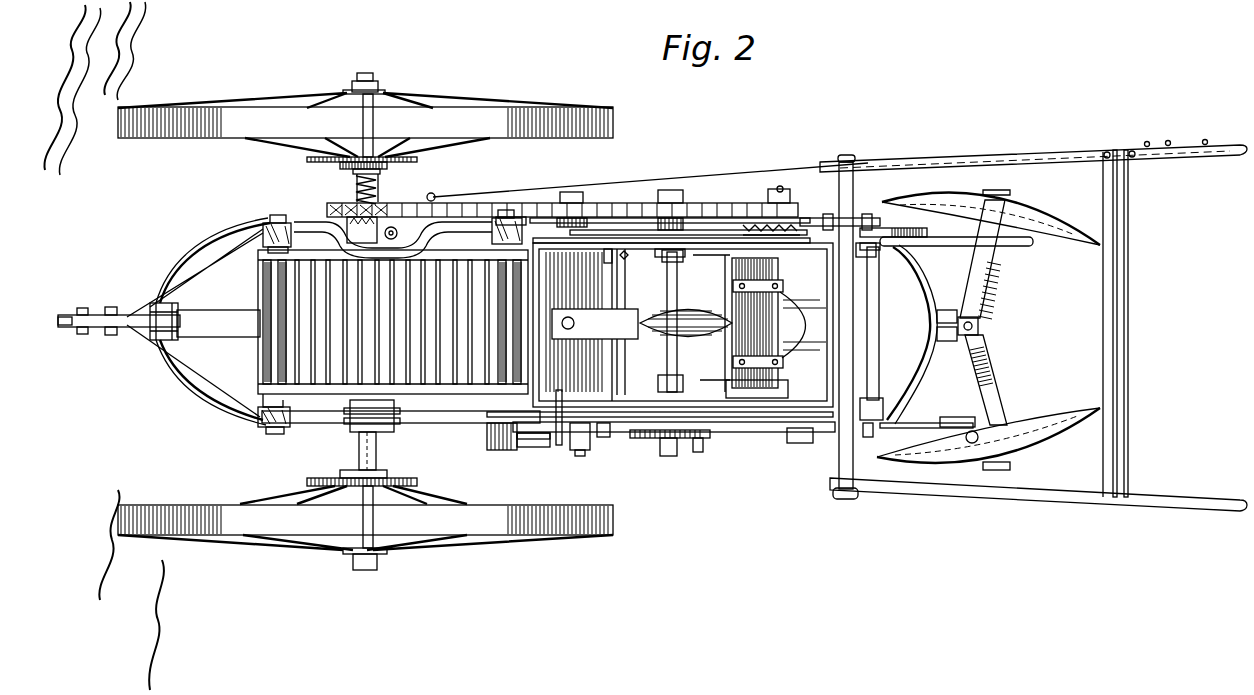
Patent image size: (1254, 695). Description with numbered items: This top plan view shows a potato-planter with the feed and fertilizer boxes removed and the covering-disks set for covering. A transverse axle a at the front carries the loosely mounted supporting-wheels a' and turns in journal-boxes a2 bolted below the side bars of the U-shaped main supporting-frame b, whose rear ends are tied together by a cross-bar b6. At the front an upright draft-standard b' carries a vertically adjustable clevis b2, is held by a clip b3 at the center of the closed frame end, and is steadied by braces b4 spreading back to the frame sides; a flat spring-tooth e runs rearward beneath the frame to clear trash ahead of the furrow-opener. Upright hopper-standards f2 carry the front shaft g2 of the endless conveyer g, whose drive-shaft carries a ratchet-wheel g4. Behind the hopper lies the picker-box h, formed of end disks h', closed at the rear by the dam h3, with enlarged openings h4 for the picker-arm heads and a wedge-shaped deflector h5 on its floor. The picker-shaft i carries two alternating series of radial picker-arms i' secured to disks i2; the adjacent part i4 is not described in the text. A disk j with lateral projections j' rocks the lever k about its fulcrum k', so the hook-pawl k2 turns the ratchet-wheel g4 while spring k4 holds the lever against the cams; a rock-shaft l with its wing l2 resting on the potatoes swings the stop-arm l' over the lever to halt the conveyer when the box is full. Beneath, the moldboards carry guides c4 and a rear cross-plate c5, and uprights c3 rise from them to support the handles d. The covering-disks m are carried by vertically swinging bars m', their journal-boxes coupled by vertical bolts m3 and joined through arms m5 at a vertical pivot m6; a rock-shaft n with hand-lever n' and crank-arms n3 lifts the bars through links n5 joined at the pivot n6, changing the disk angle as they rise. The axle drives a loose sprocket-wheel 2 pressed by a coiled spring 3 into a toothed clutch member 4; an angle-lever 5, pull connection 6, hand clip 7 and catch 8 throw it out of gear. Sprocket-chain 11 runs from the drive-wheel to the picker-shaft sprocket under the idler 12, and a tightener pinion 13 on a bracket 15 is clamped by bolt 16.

The supporting-wheels a' is at (365, 321).
The transverse axle a is at (401, 440).
The journal-boxes a2 is at (354, 430).
The main supporting-frame b is at (262, 387).
The upright standard b' is at (65, 305).
The clevis b2 is at (91, 337).
The clip b3 is at (152, 340).
The braces b4 is at (178, 420).
The cross-bar b6 is at (870, 284).
The upright braces c3 is at (822, 505).
The guides or deflectors c4 is at (858, 256).
The rear deflector c5 is at (830, 305).
The handles d is at (968, 164).
The spring-tooth e is at (210, 320).
The hopper-standards f2 is at (390, 313).
The roller frame g is at (296, 280).
The front conveyer-shaft g2 is at (254, 380).
The ratchet-wheel g4 is at (500, 450).
The picker-box h is at (661, 331).
The end disks h' is at (683, 310).
The rear plate or dam h3 is at (757, 323).
The enlarged clearance openings h4 is at (790, 386).
The wedge-shaped deflector h5 is at (655, 340).
The picker-shaft i is at (651, 321).
The picker-arms i' is at (584, 261).
The disks i2 is at (655, 275).
The shaft collar i4 is at (604, 256).
The cam disk j is at (670, 460).
The lateral projections j' is at (695, 464).
The rocking lever k is at (568, 456).
The fulcrum point k' is at (578, 474).
The hook-pawl k2 is at (523, 463).
The spring k4 is at (605, 440).
The rock-shaft l is at (574, 322).
The stop-arm l' is at (545, 432).
The wing l2 is at (595, 309).
The covering-disks m is at (988, 328).
The disk-carrying bars m' is at (951, 397).
The vertical bolts m3 is at (970, 430).
The inwardly-extending arms m5 is at (990, 290).
The vertical pivot m6 is at (980, 326).
The rock-shaft n is at (916, 337).
The hand-lever n' is at (946, 247).
The crank-arms n3 is at (833, 442).
The links n5 is at (925, 290).
The horizontal pivot n6 is at (948, 308).
The driving sprocket-wheel 2 is at (330, 212).
The coiled spring 3 is at (356, 180).
The clutch member 4 is at (348, 240).
The angle-lever 5 is at (429, 188).
The pull connection 6 is at (720, 180).
The hand clip 7 is at (1185, 144).
The pivoted catch 8 is at (1132, 150).
The driving sprocket-chain 11 is at (518, 206).
The adjustable idler 12 is at (586, 200).
The sprocket-pinion 13 is at (781, 190).
The bracket 15 is at (745, 228).
The clamping-bolt 16 is at (775, 188).